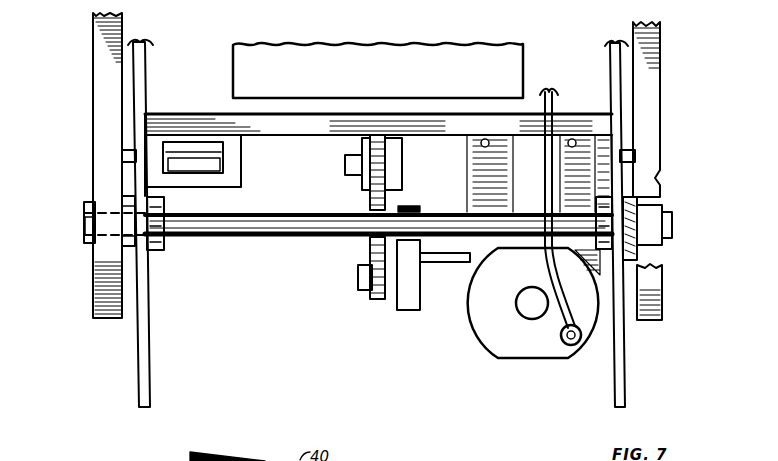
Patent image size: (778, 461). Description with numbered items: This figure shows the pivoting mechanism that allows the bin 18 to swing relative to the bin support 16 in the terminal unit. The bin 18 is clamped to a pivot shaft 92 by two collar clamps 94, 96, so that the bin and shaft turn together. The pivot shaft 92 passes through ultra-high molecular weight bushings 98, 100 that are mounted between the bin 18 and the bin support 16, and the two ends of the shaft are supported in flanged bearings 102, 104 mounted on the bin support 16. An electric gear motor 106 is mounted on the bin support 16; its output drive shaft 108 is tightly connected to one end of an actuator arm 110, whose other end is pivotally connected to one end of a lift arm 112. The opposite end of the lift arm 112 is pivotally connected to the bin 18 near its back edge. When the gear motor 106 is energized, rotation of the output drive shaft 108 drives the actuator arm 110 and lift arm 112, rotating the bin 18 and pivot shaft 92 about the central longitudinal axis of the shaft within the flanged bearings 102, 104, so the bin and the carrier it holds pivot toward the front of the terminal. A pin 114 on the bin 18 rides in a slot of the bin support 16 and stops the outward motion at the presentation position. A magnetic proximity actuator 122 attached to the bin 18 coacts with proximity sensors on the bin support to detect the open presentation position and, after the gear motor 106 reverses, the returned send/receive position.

The bin support 16 is at (94, 318).
The bin 18 is at (138, 375).
The pivot shaft 92 is at (280, 240).
The collar clamp 94 is at (164, 250).
The collar clamp 96 is at (575, 262).
The ultra-high molecular weight bushing 98 is at (122, 200).
The ultra-high molecular weight bushing 100 is at (632, 200).
The flanged bearing 102 is at (88, 243).
The flanged bearing 104 is at (650, 205).
The electric gear motor 106 is at (490, 345).
The output drive shaft 108 is at (442, 264).
The actuator arm 110 is at (400, 306).
The lift arm 112 is at (370, 198).
The pin 114 is at (126, 152).
The magnetic proximity actuator 122 is at (207, 174).